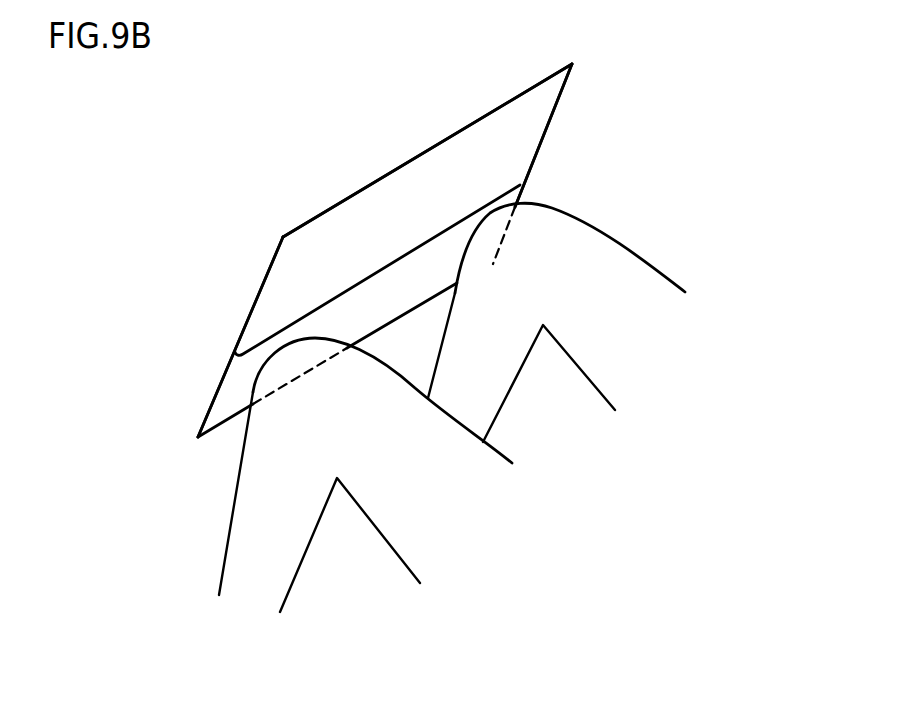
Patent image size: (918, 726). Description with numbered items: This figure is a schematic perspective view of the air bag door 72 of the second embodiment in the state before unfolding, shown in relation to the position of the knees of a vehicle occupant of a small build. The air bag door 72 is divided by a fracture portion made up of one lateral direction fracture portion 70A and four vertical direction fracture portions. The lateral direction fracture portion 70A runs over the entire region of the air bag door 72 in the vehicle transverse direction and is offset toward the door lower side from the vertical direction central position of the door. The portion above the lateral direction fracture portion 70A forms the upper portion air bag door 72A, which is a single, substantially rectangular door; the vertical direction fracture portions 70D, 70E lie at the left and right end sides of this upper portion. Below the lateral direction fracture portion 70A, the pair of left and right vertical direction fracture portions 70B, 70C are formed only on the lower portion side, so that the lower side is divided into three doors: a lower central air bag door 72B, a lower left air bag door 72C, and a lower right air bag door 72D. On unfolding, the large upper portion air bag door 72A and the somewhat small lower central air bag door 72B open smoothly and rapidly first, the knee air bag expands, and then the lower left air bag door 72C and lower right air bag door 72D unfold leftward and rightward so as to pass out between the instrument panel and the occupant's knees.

The air bag door 72 is at (563, 132).
The upper portion air bag door 72A is at (413, 177).
The lower central air bag door 72B is at (393, 297).
The lower left air bag door 72C is at (236, 379).
The lower right air bag door 72D is at (455, 238).
The lateral direction fracture portion 70A is at (363, 283).
The vertical direction fracture portion 70B is at (333, 342).
The vertical direction fracture portion 70C is at (458, 265).
The vertical direction fracture portion 70D is at (262, 284).
The vertical direction fracture portion 70E is at (537, 157).